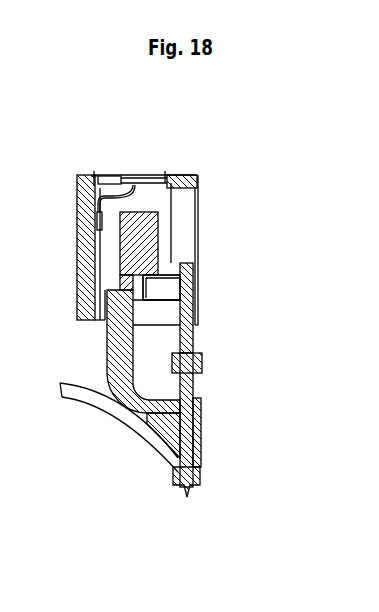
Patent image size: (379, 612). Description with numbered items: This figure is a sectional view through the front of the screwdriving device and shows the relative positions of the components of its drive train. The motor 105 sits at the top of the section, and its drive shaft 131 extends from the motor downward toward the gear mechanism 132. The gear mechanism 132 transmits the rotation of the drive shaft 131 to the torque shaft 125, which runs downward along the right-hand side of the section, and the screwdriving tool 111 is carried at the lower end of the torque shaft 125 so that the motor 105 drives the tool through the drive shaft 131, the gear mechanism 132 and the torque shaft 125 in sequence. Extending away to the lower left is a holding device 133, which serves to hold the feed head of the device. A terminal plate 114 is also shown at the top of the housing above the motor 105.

The terminal plate 114 is at (143, 174).
The motor 105 is at (158, 220).
The drive shaft 131 is at (180, 263).
The gear mechanism 132 is at (186, 288).
The torque shaft 125 is at (193, 342).
The screwdriving tool 111 is at (193, 391).
The holding device 133 is at (118, 357).